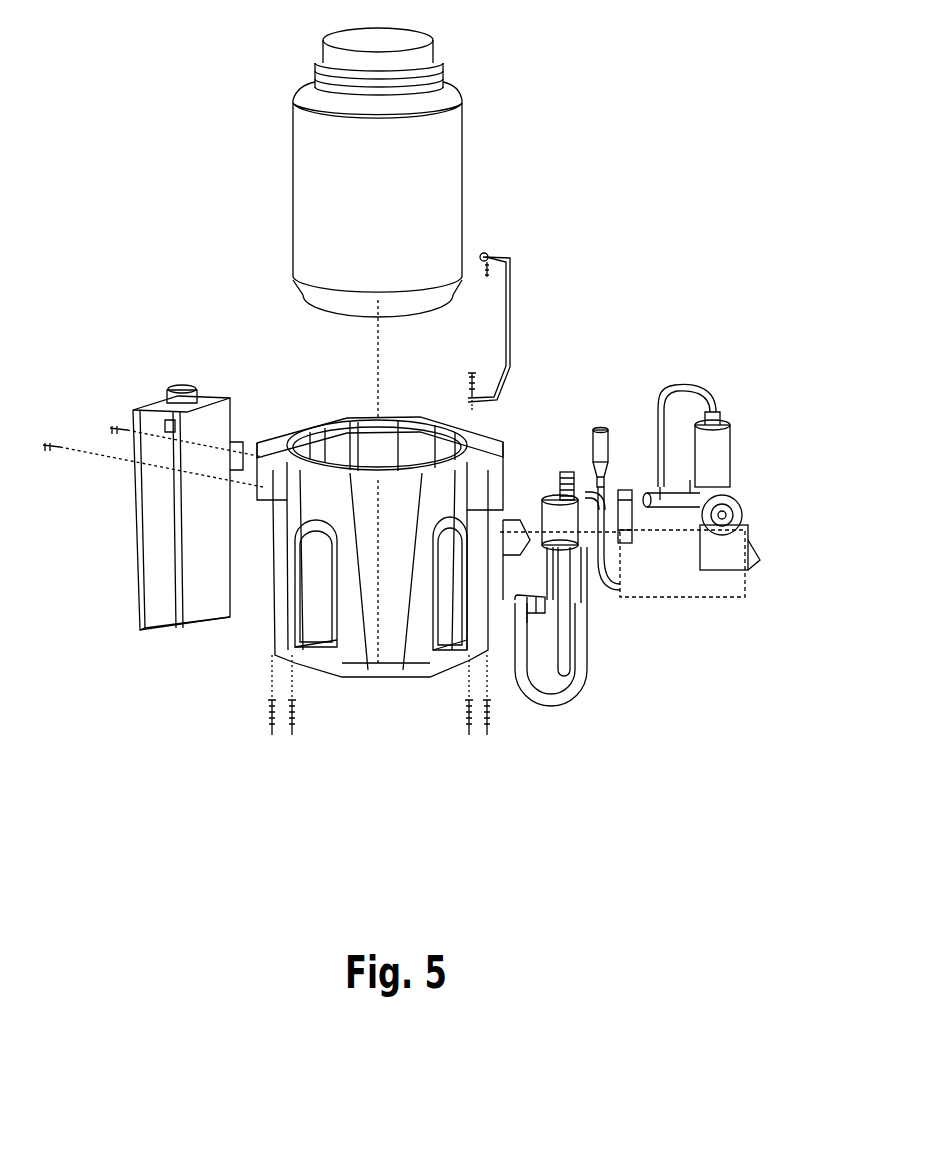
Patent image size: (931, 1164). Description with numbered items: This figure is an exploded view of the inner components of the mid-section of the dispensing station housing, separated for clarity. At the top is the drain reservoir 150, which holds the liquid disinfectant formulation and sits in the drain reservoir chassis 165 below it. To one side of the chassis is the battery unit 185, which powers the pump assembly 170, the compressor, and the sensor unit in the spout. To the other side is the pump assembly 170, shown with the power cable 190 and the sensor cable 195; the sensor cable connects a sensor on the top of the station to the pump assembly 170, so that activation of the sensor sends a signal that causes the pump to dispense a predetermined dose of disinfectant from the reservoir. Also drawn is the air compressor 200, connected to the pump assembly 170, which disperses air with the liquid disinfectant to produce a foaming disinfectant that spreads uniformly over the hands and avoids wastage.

The drain reservoir 150 is at (462, 140).
The drain reservoir chassis 165 is at (390, 680).
The pump assembly 170 is at (728, 447).
The battery unit 185 is at (138, 530).
The power cable 190 is at (632, 515).
The sensor cable 195 is at (600, 430).
The air compressor 200 is at (575, 610).